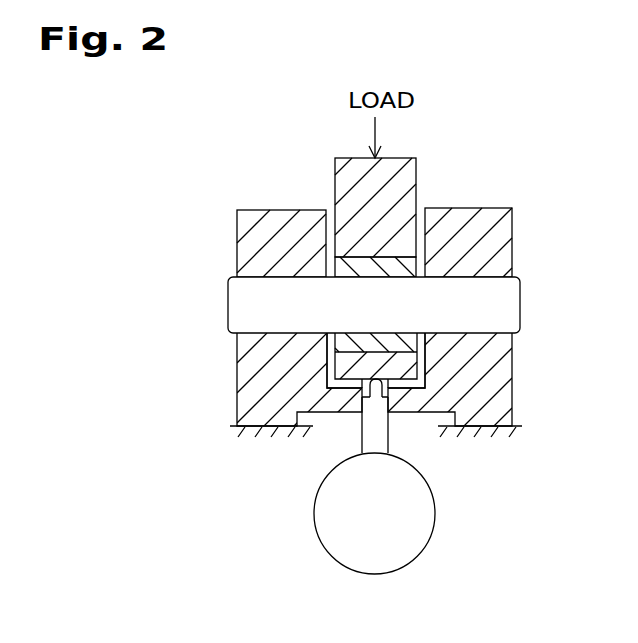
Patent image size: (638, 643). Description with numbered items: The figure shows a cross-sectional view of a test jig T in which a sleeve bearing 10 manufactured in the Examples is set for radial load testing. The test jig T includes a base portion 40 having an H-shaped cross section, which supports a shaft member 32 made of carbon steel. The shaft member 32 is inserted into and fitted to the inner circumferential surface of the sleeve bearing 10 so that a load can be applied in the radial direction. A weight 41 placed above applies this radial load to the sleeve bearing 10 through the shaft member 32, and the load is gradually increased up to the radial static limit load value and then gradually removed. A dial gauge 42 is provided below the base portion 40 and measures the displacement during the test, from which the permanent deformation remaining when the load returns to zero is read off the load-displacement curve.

The sleeve bearing 10 is at (387, 268).
The shaft member 32 is at (505, 305).
The base portion 40 is at (494, 236).
The weight 41 is at (405, 182).
The dial gauge 42 is at (410, 520).
The test jig T is at (523, 346).